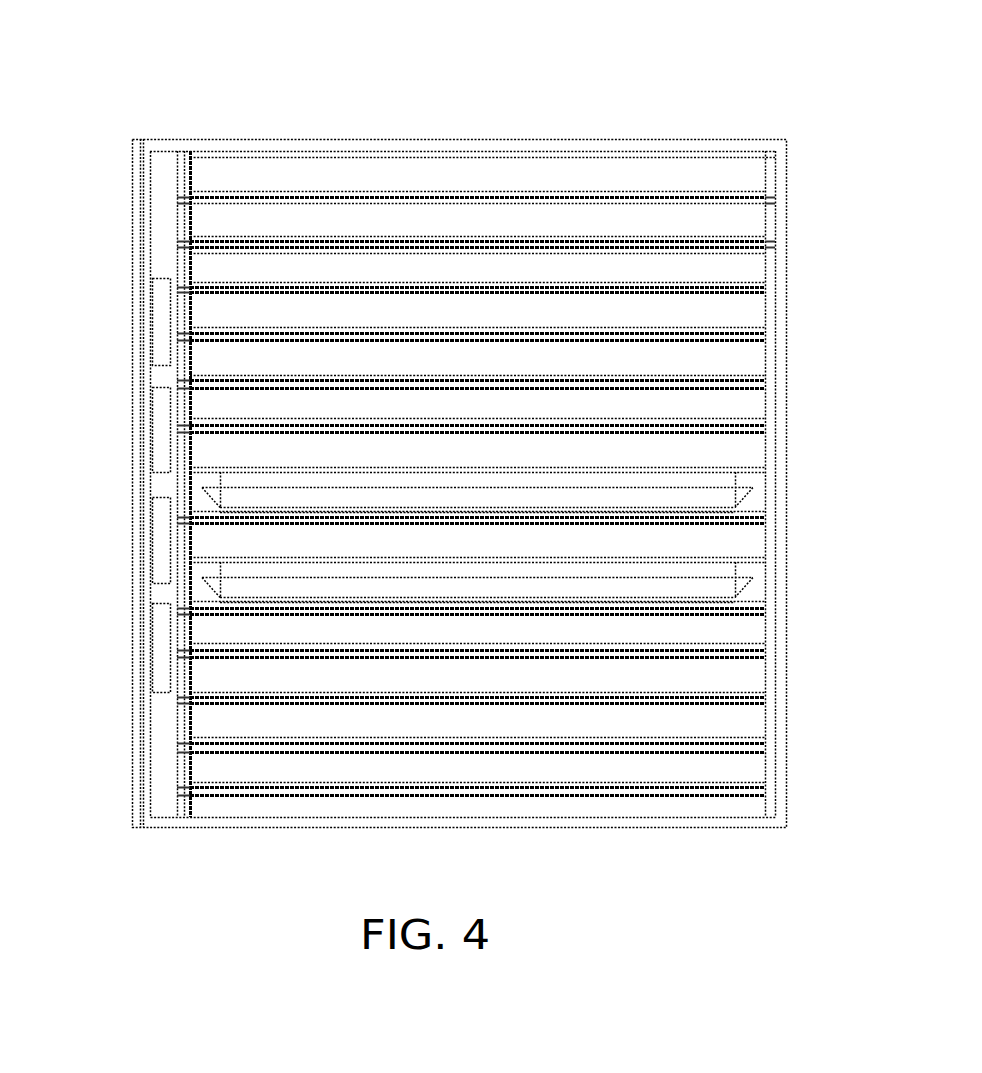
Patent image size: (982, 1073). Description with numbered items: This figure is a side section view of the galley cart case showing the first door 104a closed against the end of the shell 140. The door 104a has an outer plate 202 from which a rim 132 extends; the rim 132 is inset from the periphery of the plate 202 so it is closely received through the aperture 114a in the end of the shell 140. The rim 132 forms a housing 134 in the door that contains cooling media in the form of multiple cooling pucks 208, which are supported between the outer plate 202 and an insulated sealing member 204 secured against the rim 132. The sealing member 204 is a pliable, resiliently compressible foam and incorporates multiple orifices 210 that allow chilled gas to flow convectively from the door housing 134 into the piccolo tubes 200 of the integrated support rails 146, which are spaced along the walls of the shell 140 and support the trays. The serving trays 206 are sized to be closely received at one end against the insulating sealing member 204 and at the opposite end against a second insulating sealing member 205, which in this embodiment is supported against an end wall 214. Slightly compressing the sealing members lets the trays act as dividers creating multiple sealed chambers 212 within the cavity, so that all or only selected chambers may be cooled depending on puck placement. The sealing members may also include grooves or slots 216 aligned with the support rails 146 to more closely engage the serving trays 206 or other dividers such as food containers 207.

The first door 104a is at (127, 638).
The aperture 114a is at (140, 139).
The rim 132 is at (159, 151).
The housing 134 is at (160, 482).
The shell 140 is at (512, 139).
The integrated support rails 146 is at (743, 197).
The piccolo tubes 200 is at (527, 203).
The outer plate 202 is at (134, 827).
The insulated sealing member 204 is at (193, 178).
The second insulating sealing member 205 is at (770, 176).
The serving trays 206 is at (628, 192).
The food containers 207 is at (635, 469).
The cooling pucks 208 is at (165, 230).
The orifices 210 is at (192, 200).
The sealed chambers 212 is at (477, 274).
The end wall 214 is at (787, 355).
The grooves or slots 216 is at (192, 190).